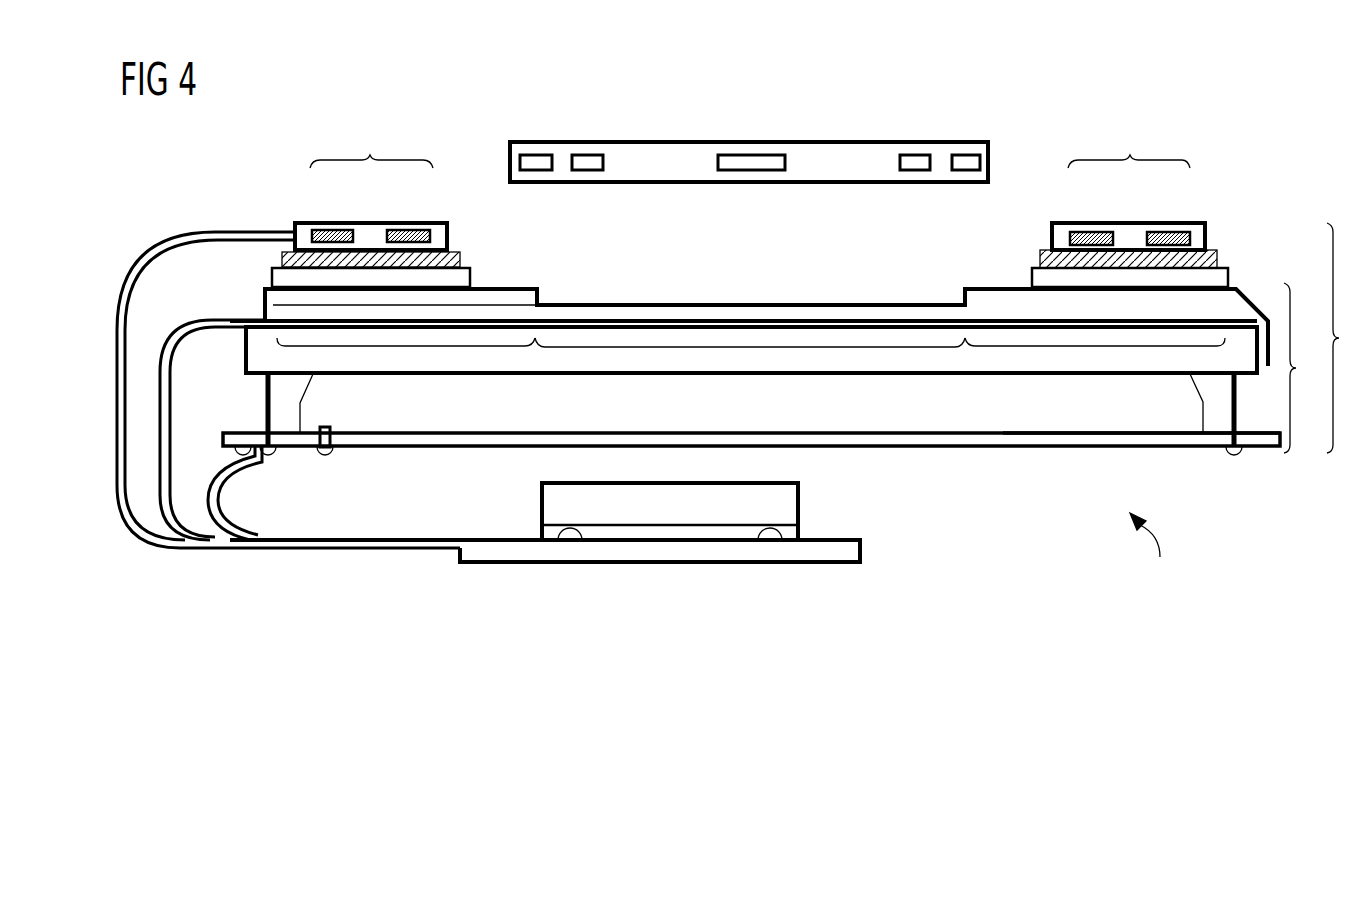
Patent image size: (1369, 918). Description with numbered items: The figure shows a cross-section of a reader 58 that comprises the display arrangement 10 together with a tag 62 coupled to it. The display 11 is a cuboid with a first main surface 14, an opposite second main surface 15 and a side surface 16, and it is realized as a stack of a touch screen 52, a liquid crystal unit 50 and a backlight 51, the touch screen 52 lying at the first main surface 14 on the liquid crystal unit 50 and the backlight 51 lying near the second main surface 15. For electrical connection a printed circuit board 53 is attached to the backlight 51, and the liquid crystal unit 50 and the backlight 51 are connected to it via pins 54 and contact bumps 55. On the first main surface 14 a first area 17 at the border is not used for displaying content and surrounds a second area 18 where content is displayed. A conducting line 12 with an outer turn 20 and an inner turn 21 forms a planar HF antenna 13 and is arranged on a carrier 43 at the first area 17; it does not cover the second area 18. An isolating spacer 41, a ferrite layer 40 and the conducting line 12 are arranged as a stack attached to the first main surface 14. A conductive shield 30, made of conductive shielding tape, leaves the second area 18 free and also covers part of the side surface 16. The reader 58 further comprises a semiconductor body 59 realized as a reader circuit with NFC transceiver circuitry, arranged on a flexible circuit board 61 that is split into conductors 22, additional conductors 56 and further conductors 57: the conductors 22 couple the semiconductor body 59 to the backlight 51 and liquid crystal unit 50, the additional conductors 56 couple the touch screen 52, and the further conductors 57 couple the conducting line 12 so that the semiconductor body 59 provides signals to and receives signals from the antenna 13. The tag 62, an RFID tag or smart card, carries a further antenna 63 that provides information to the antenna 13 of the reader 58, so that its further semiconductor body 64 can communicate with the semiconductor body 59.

The display arrangement 10 is at (1344, 338).
The display 11 is at (1301, 368).
The conducting line 12 is at (750, 146).
The antenna 13 is at (1150, 138).
The first main surface 14 is at (778, 305).
The second main surface 15 is at (915, 448).
The side surface 16 is at (247, 395).
The first area 17 is at (408, 347).
The second area 18 is at (748, 347).
The outer turn 20 is at (332, 232).
The inner turn 21 is at (410, 232).
The conductors 22 is at (235, 515).
The conductive shield 30 is at (500, 288).
The ferrite layer 40 is at (460, 257).
The isolating spacer 41 is at (275, 282).
The carrier 43 is at (448, 235).
The liquid crystal unit 50 is at (697, 337).
The backlight 51 is at (993, 423).
The touch screen 52 is at (615, 313).
The printed circuit board 53 is at (478, 437).
The pins 54 is at (263, 410).
The contact bumps 55 is at (330, 428).
The additional conductors 56 is at (200, 318).
The further conductors 57 is at (200, 235).
The reader 58 is at (1151, 551).
The semiconductor body 59 is at (785, 505).
The flexible circuit board 61 is at (855, 550).
The tag 62 is at (990, 162).
The further antenna 63 is at (905, 160).
The further semiconductor body 64 is at (750, 160).